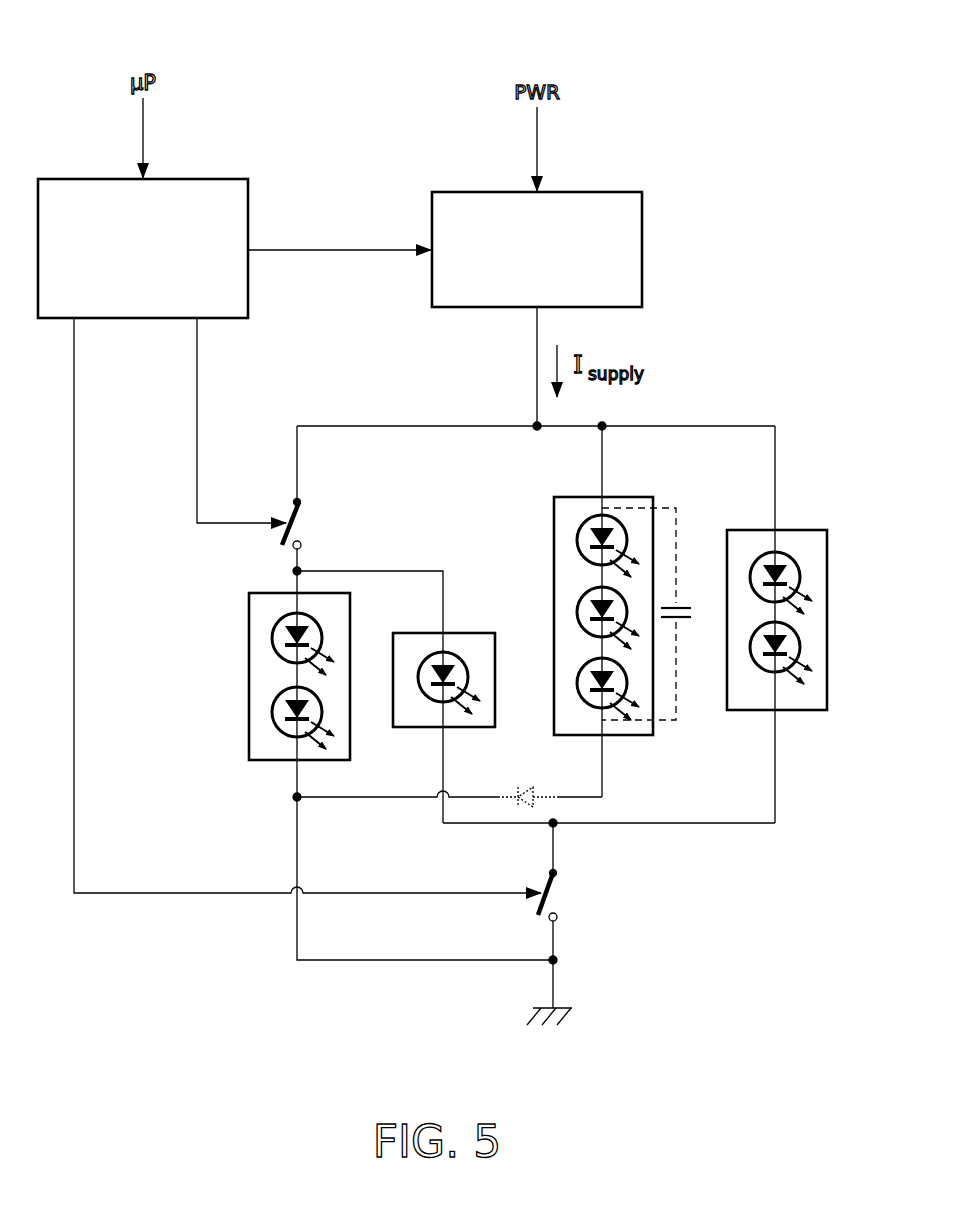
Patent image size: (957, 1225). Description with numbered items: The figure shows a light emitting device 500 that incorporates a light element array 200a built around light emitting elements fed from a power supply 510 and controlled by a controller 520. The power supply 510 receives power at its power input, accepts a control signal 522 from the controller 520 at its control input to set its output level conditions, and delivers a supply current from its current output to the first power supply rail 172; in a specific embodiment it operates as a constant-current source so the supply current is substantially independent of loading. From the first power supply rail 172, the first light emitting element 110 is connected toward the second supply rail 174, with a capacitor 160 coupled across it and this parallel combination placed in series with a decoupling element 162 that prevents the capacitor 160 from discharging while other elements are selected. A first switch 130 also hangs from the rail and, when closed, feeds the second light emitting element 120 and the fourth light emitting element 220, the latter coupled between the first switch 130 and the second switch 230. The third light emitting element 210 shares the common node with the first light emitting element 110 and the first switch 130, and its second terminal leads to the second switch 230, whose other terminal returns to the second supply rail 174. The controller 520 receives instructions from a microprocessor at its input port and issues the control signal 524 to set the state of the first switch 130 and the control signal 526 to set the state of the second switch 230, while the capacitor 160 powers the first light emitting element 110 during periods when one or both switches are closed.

The light emitting device 500 is at (777, 68).
The controller 520 is at (128, 262).
The power supply 510 is at (522, 262).
The control signal 522 is at (362, 276).
The control signal 524 is at (215, 422).
The control signal 526 is at (92, 422).
The first power supply rail 172 is at (465, 415).
The switch 130 is at (335, 539).
The second light emitting element 120 is at (195, 699).
The fourth light emitting element 220 is at (388, 785).
The first light emitting element 110 is at (492, 527).
The capacitor 160 is at (687, 607).
The third light emitting element 210 is at (817, 517).
The decoupling element 162 is at (527, 786).
The second switch 230 is at (582, 917).
The second supply rail 174 is at (570, 982).
The light element array 200a is at (798, 401).